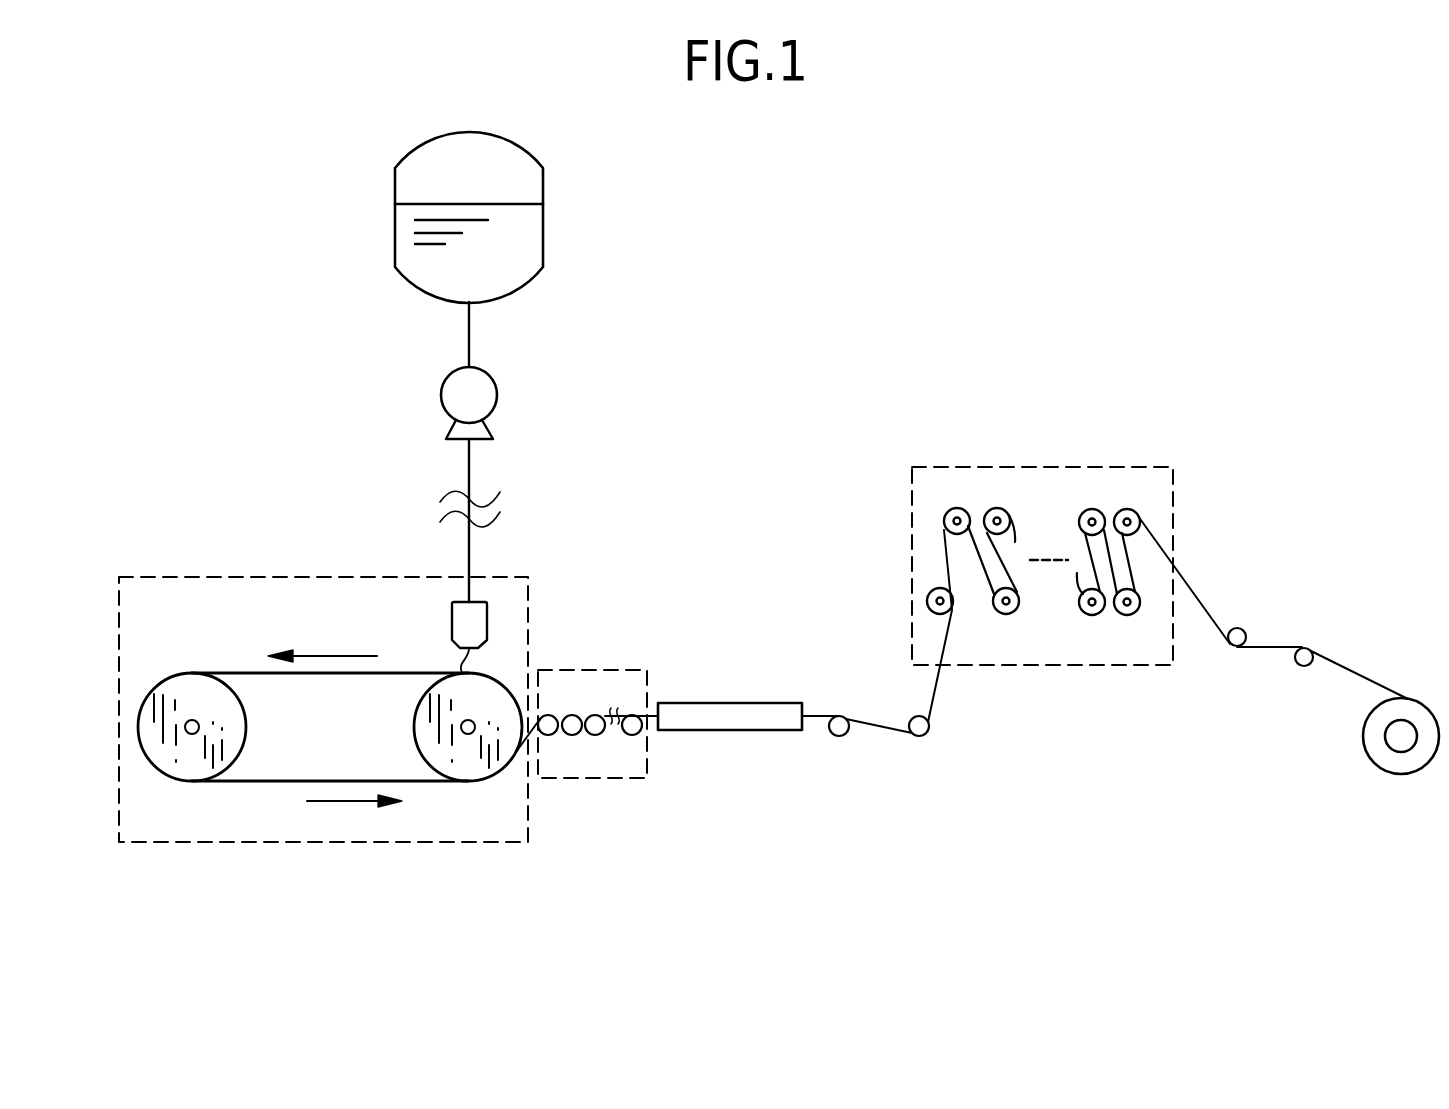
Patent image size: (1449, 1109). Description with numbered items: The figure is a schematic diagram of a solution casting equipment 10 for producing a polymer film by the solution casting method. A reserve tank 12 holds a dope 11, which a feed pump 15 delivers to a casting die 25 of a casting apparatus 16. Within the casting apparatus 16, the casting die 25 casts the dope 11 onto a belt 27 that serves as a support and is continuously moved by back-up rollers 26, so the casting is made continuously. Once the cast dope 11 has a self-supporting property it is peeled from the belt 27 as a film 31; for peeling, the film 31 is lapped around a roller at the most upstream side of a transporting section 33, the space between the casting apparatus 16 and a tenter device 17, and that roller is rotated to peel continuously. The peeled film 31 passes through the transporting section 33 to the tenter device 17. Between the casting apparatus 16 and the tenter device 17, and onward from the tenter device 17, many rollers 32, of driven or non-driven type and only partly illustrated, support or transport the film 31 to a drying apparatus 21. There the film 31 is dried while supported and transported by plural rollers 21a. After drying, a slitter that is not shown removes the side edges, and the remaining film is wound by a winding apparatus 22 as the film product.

The solution casting equipment 10 is at (790, 428).
The dope 11 is at (452, 277).
The reserve tank 12 is at (544, 236).
The feed pump 15 is at (498, 395).
The casting apparatus 16 is at (239, 535).
The tenter device 17 is at (752, 730).
The drying apparatus 21 is at (1103, 440).
The rollers 21a is at (1092, 615).
The winding apparatus 22 is at (1397, 750).
The casting die 25 is at (452, 627).
The back-up rollers 26 is at (240, 745).
The belt 27 is at (498, 680).
The film 31 is at (653, 703).
The rollers 32 is at (842, 736).
The transporting section 33 is at (578, 778).